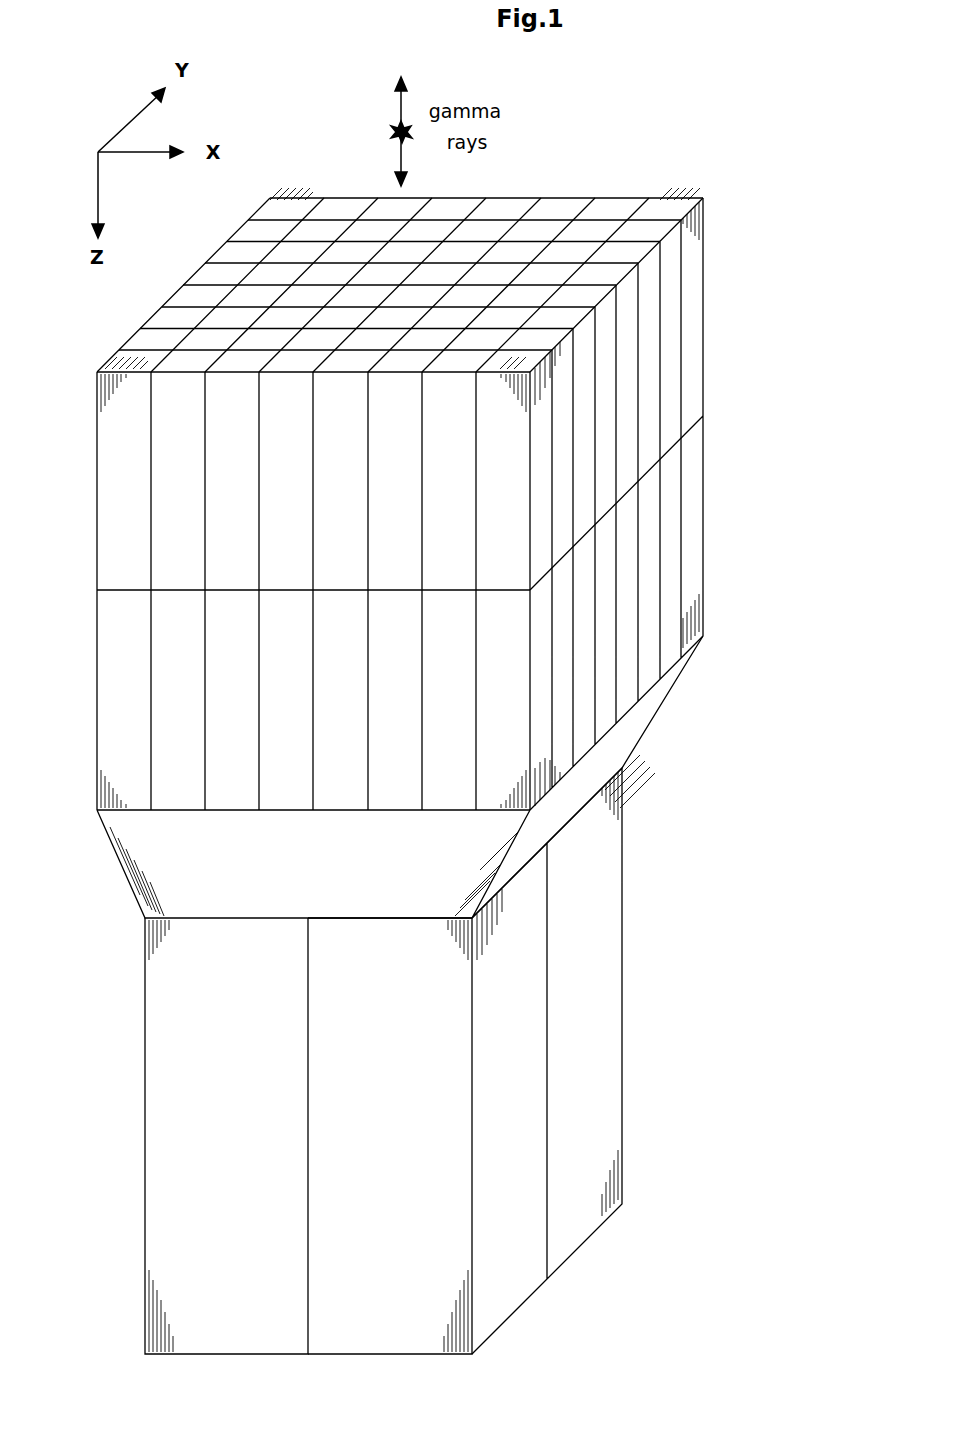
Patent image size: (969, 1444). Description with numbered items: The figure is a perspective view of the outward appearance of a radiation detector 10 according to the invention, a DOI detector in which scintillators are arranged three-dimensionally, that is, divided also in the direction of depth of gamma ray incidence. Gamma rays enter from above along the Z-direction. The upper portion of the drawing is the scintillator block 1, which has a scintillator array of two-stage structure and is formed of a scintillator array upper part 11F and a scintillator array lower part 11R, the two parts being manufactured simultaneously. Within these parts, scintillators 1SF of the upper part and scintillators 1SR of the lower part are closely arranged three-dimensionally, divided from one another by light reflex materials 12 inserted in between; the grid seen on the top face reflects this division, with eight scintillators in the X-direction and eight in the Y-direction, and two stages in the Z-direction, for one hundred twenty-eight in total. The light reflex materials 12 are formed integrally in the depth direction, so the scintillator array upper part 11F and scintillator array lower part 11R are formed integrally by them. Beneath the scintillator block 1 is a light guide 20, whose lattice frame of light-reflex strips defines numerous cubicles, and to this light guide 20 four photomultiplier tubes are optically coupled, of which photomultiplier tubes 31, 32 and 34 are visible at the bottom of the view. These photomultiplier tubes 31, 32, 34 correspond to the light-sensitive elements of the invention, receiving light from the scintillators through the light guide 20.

The radiation detector 10 is at (838, 197).
The scintillator block 1 is at (788, 298).
The light reflex materials 12 is at (240, 238).
The scintillator array upper part 11F is at (711, 198).
The scintillator array lower part 11R is at (711, 417).
The scintillators 1SF is at (105, 476).
The scintillators 1SR is at (105, 696).
The light guide 20 is at (667, 697).
The photomultiplier tube 31 is at (148, 1186).
The photomultiplier tube 32 is at (503, 1313).
The photomultiplier tube 34 is at (575, 1243).